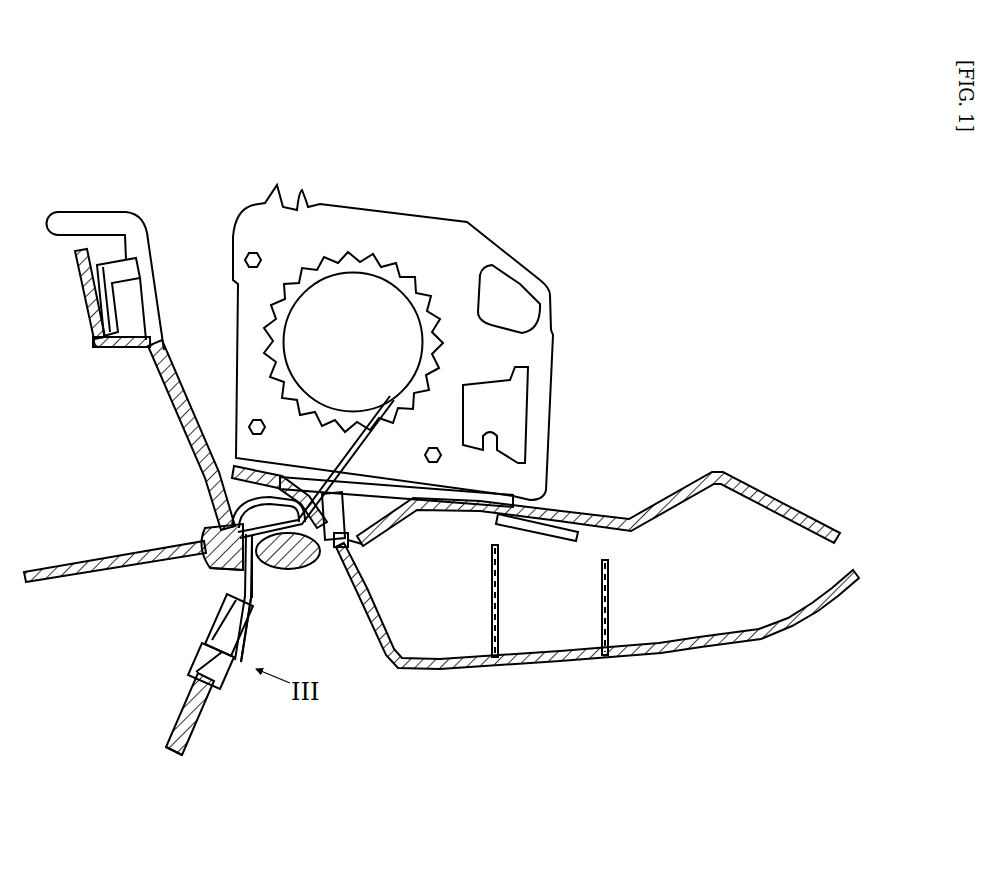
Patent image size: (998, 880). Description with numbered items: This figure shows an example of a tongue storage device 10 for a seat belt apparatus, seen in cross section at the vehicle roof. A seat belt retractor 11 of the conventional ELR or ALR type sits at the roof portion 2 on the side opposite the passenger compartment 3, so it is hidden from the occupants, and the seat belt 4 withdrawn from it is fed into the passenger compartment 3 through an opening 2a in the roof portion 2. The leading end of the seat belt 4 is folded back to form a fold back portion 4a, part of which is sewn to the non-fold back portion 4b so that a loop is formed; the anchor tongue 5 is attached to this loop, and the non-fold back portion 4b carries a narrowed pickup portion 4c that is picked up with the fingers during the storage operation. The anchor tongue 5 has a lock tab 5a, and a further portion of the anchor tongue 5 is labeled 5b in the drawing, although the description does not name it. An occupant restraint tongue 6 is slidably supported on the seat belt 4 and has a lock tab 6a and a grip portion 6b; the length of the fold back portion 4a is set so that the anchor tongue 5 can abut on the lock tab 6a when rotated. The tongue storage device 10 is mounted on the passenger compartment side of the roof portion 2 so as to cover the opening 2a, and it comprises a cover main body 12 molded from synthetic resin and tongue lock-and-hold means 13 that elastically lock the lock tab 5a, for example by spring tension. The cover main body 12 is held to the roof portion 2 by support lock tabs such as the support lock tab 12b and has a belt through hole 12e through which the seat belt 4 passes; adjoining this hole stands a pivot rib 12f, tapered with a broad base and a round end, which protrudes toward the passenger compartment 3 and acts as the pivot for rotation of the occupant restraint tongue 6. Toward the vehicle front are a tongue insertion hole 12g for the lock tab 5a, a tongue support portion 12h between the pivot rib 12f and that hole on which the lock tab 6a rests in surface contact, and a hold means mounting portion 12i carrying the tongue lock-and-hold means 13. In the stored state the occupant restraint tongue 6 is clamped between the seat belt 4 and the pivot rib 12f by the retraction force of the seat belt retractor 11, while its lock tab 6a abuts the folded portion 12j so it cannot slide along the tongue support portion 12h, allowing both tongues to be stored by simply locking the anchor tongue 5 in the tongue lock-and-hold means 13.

The roof portion 2 is at (657, 510).
The opening 2a is at (340, 504).
The passenger compartment 3 is at (488, 774).
The seat belt 4 is at (362, 452).
The fold back portion 4a is at (226, 604).
The non-fold back portion 4b is at (253, 583).
The pickup portion 4c is at (252, 620).
The anchor tongue 5 is at (228, 691).
The lock tab 5a is at (180, 748).
The bolt head/nut 5b is at (192, 672).
The occupant restraint tongue 6 is at (180, 543).
The lock tab 6a is at (48, 570).
The grip portion 6b is at (220, 562).
The tongue storage device 10 is at (360, 694).
The seat belt retractor 11 is at (472, 248).
The cover main body 12 is at (575, 663).
The support lock tab 12b is at (96, 218).
The belt through hole 12e is at (334, 562).
The pivot rib 12f is at (223, 530).
The tongue insertion hole 12g is at (133, 348).
The tongue support portion 12h is at (168, 405).
The hold means mounting portion 12i is at (82, 307).
The folded portion 12j is at (147, 353).
The tongue lock-and-hold means 13 is at (124, 270).